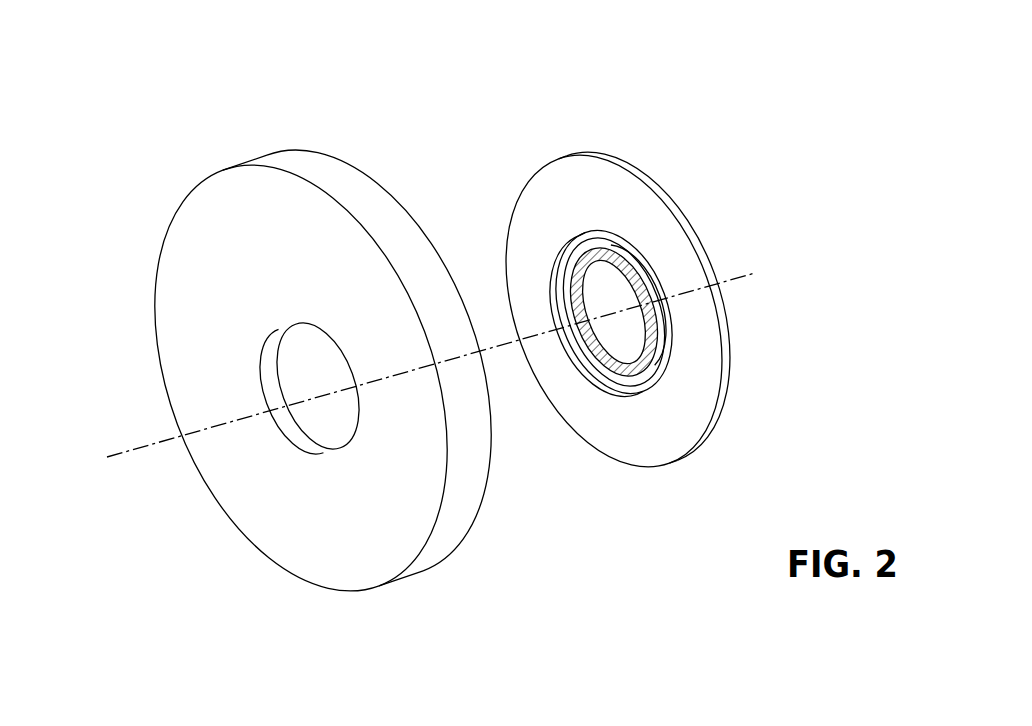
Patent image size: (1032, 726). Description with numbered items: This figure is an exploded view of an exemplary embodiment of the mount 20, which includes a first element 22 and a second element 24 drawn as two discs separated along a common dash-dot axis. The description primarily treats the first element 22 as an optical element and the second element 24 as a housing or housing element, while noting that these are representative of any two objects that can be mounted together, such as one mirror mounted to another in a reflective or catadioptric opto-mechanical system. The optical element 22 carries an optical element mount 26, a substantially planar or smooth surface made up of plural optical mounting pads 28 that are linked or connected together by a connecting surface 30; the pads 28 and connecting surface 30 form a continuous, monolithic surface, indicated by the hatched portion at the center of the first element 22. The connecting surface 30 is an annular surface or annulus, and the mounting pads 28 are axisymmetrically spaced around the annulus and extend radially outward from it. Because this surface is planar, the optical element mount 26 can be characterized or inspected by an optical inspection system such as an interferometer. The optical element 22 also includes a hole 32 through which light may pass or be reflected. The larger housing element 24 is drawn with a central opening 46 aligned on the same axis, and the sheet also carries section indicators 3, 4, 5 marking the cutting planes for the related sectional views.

The mount 20 is at (464, 61).
The first element 22 is at (555, 158).
The second element 24 is at (195, 190).
The optical element mount 26 is at (661, 274).
The optical mounting pads 28 is at (633, 258).
The connecting surface 30 is at (593, 256).
The hole 32 is at (633, 317).
The central bore 46 is at (284, 376).
The section line 3- 3 is at (482, 178).
The section line 4- 4 is at (363, 122).
The section line 5- 5 is at (93, 225).